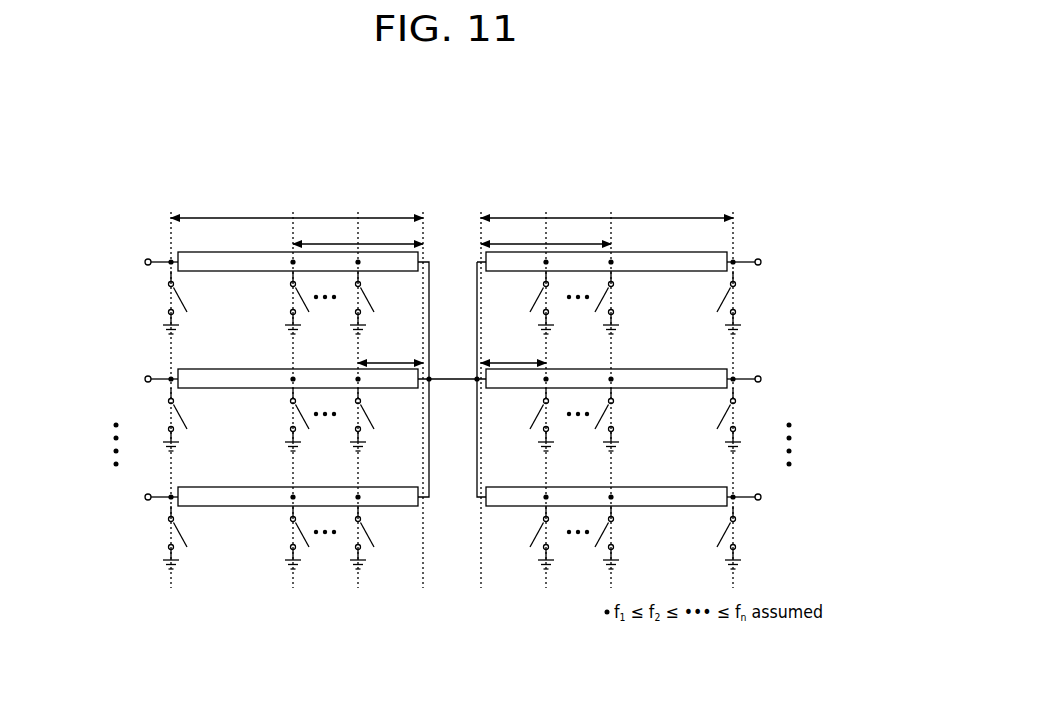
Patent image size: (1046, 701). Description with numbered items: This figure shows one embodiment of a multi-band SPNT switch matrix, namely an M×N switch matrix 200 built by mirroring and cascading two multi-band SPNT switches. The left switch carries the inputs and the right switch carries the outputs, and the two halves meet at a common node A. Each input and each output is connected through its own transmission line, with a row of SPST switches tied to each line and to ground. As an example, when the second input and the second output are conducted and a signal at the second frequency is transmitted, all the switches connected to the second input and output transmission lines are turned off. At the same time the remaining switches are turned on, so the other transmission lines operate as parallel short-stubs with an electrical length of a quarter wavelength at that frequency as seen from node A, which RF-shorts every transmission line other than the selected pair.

The M×N switch matrix 200 is at (628, 152).
The node A is at (452, 379).